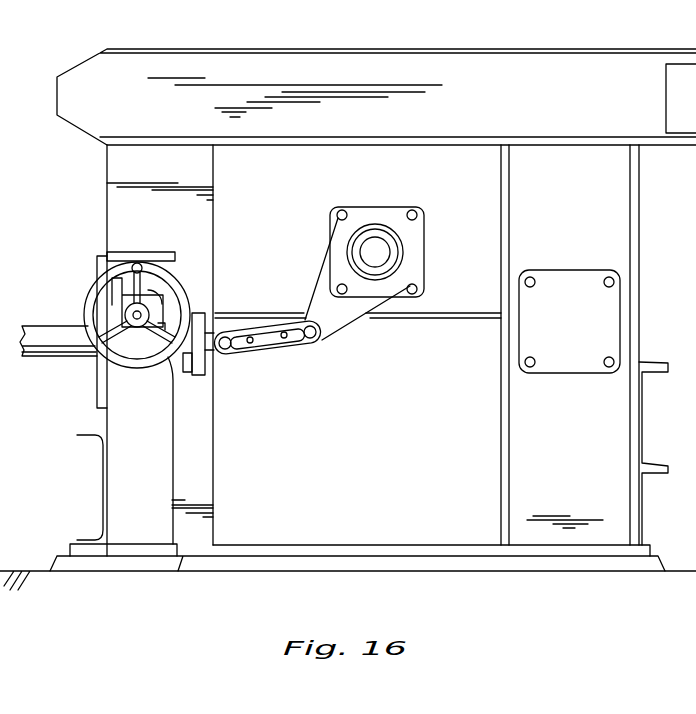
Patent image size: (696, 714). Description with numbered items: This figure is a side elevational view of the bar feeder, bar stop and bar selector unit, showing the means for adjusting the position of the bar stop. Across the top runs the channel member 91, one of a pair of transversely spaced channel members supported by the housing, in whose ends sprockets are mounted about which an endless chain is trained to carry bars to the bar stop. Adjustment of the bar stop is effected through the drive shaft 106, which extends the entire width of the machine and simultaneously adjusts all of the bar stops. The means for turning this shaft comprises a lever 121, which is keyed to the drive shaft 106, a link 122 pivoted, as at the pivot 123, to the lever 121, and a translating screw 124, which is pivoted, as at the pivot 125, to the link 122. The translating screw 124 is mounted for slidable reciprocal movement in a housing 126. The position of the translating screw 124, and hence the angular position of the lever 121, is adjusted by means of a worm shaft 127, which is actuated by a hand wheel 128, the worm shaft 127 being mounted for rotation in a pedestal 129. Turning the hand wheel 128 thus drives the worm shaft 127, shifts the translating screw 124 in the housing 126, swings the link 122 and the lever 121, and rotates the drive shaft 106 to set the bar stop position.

The channel member 91 is at (553, 66).
The drive shaft 106 is at (378, 262).
The lever 121 is at (335, 317).
The link 122 is at (273, 355).
The pivot 123 is at (312, 339).
The translating screw 124 is at (47, 356).
The pivot 125 is at (227, 349).
The housing 126 is at (98, 397).
The worm shaft 127 is at (133, 310).
The hand wheel 128 is at (93, 310).
The pedestal 129 is at (120, 455).